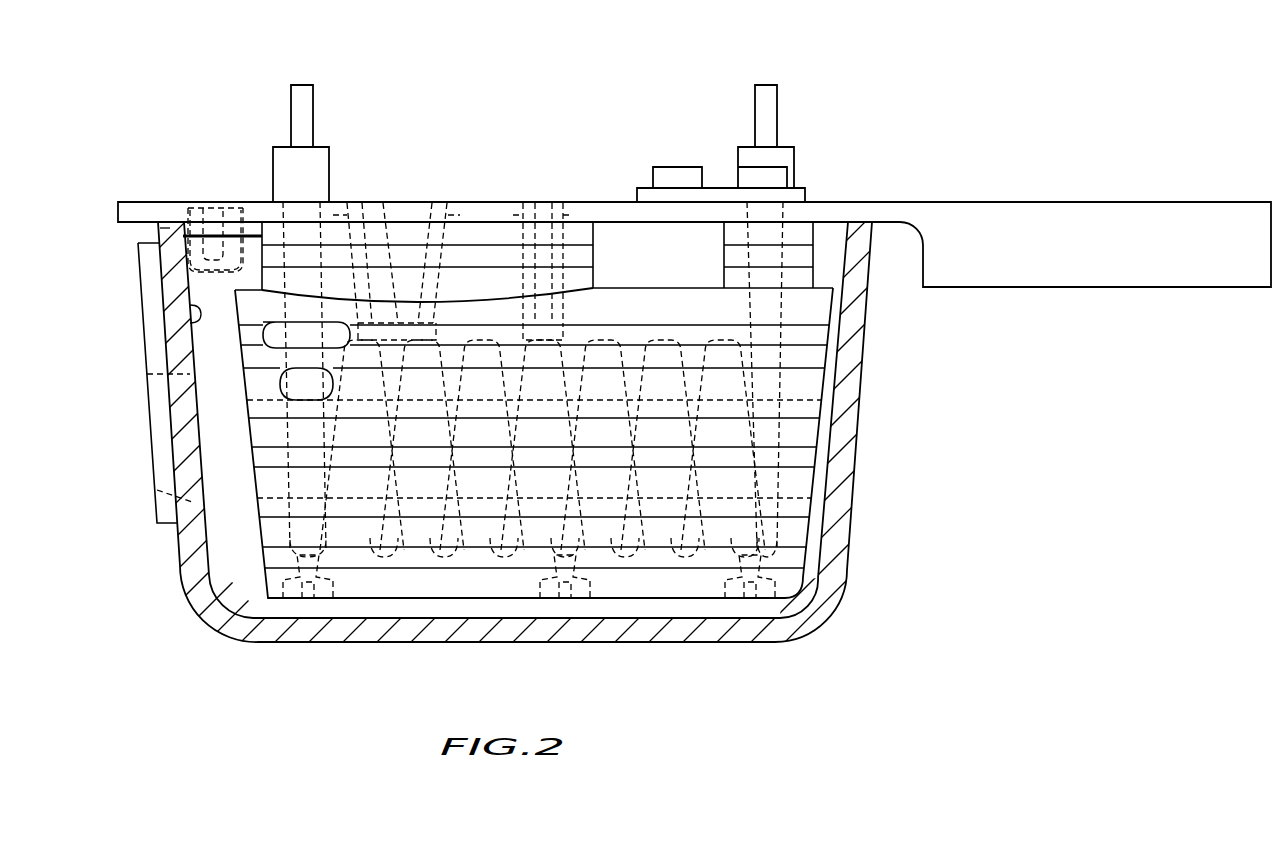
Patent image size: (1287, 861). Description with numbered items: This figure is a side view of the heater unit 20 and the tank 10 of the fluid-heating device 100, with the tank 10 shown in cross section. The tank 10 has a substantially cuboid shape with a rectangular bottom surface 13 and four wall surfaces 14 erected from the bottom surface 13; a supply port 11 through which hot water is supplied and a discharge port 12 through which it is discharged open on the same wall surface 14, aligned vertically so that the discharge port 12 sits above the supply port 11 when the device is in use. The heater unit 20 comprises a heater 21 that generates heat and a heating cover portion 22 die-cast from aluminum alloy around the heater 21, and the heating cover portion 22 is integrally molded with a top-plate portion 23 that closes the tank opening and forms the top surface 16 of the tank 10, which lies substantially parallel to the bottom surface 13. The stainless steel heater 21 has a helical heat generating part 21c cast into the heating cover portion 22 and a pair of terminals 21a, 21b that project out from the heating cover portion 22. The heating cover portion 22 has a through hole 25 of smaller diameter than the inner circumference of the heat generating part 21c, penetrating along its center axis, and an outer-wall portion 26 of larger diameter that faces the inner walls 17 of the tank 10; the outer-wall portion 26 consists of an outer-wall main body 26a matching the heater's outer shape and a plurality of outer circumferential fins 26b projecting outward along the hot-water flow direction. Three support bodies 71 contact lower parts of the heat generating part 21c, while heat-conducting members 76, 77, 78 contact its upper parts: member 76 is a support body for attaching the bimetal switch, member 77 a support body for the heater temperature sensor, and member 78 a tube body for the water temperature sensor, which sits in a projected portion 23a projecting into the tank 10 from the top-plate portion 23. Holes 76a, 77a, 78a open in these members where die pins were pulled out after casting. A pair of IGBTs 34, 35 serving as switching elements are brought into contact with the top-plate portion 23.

The fluid-heating device 100 is at (1187, 125).
The tank 10 is at (190, 393).
The supply port 11 is at (157, 490).
The discharge port 12 is at (147, 374).
The bottom surface 13 is at (267, 617).
The wall surface 14 is at (197, 515).
The top surface 16 is at (165, 228).
The inner wall 17 is at (188, 312).
The heater unit 20 is at (627, 287).
The heater 21 is at (383, 555).
The terminal 21a is at (302, 95).
The terminal 21b is at (765, 110).
The heat generating part 21c is at (445, 530).
The heating cover portion 22 is at (340, 600).
The top-plate portion 23 is at (847, 213).
The projected portion 23a is at (200, 278).
The through hole 25 is at (592, 598).
The outer-wall portion 26 is at (542, 537).
The outer-wall main body 26a is at (627, 527).
The outer circumferential fin 26b is at (700, 523).
The IGBT 34 is at (747, 173).
The IGBT 35 is at (683, 177).
The support body 71 is at (277, 605).
The heat-conducting member 76 is at (433, 213).
The hole 76a is at (383, 207).
The heat-conducting member 77 is at (513, 213).
The hole 77a is at (552, 213).
The heat-conducting member 78 is at (182, 207).
The hole 78a is at (220, 213).